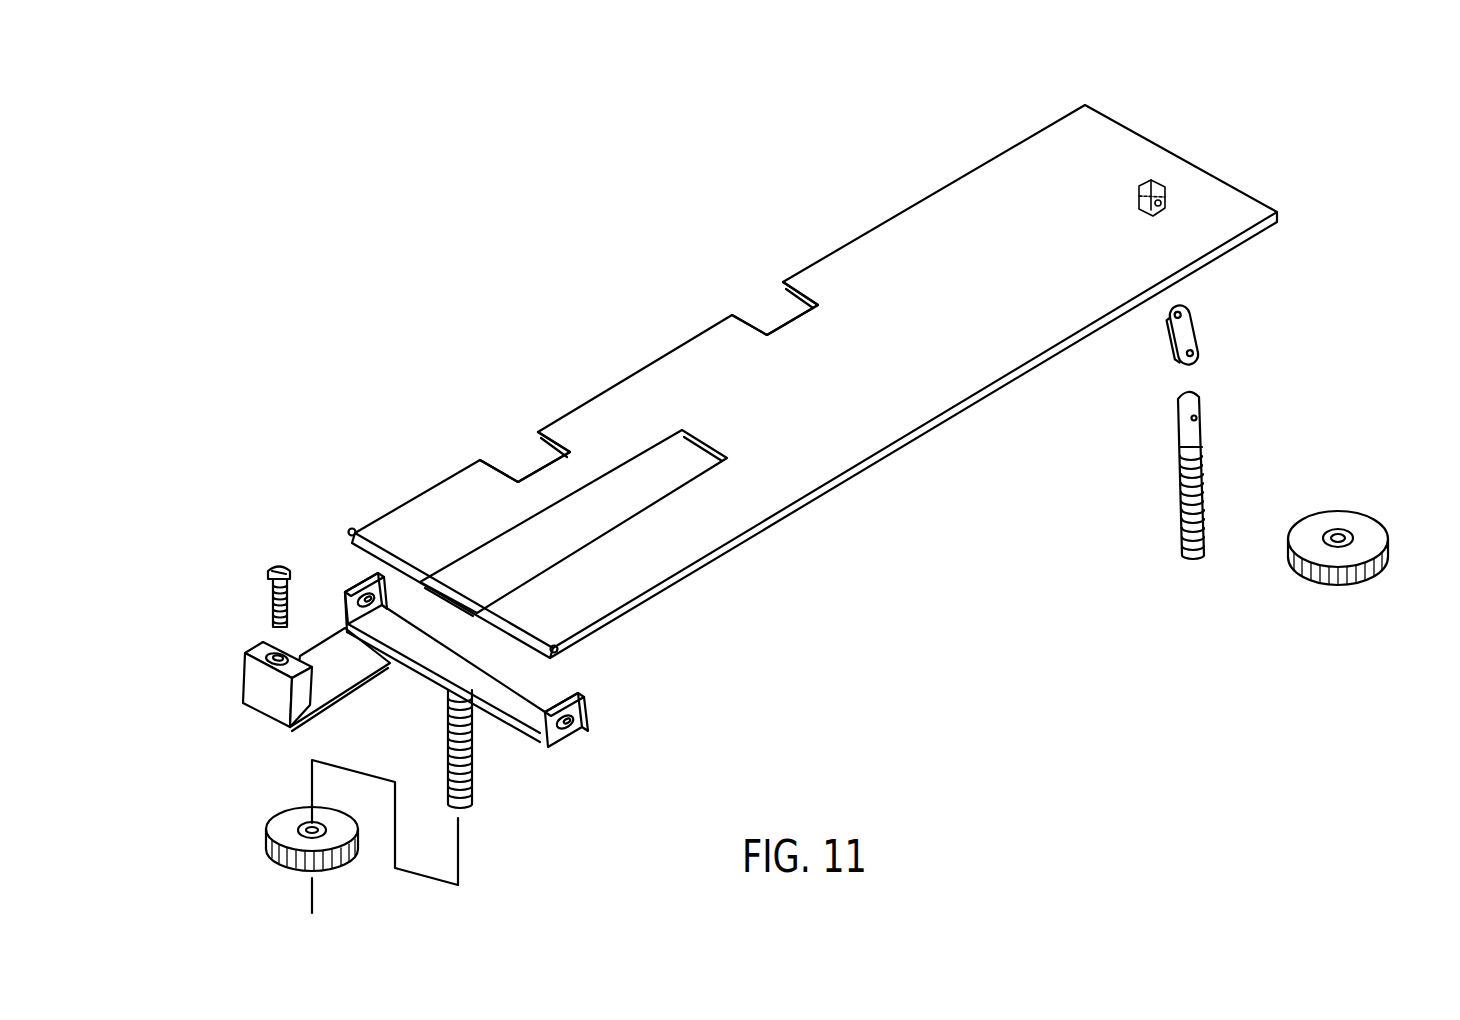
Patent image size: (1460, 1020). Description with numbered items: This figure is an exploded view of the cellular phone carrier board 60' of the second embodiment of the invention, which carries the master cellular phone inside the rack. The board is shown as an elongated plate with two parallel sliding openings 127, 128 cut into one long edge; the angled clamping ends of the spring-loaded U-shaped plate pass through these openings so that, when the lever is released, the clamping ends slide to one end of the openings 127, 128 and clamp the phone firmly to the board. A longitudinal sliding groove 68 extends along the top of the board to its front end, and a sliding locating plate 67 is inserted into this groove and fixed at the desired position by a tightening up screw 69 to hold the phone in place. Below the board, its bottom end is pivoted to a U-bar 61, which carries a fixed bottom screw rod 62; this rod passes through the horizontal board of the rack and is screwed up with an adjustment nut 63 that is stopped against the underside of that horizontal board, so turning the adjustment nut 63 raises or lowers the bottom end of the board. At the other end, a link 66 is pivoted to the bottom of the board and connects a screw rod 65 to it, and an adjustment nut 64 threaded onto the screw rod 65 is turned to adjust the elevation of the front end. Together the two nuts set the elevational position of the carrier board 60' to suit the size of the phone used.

The cellular phone carrier board 60' is at (813, 353).
The U-bar 61 is at (540, 692).
The fixed bottom screw rod 62 is at (477, 767).
The adjustment nut 63 is at (268, 827).
The adjustment nut 64 is at (1385, 525).
The screw rod 65 is at (1205, 472).
The link 66 is at (1200, 332).
The sliding locating plate 67 is at (260, 690).
The longitudinal sliding groove 68 is at (648, 470).
The tightening up screw 69 is at (283, 560).
The sliding opening 127 is at (525, 460).
The sliding opening 128 is at (770, 313).